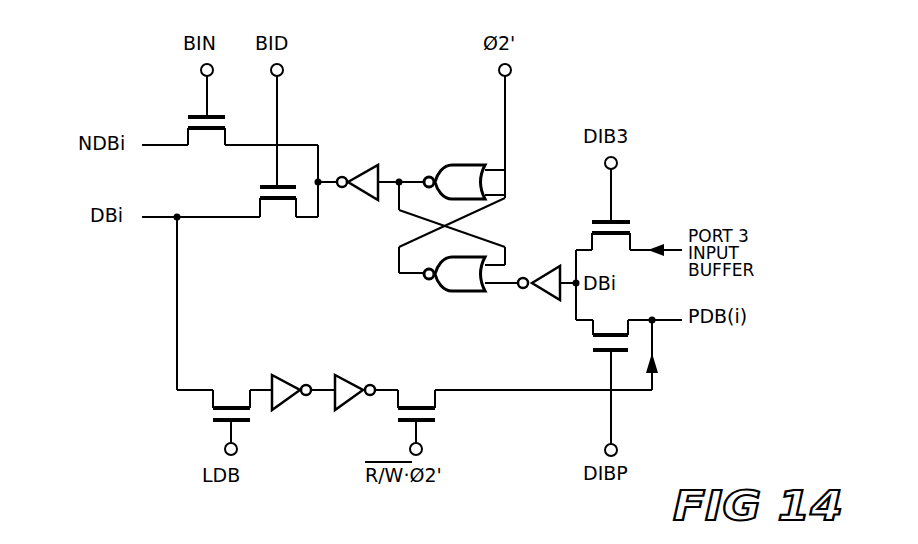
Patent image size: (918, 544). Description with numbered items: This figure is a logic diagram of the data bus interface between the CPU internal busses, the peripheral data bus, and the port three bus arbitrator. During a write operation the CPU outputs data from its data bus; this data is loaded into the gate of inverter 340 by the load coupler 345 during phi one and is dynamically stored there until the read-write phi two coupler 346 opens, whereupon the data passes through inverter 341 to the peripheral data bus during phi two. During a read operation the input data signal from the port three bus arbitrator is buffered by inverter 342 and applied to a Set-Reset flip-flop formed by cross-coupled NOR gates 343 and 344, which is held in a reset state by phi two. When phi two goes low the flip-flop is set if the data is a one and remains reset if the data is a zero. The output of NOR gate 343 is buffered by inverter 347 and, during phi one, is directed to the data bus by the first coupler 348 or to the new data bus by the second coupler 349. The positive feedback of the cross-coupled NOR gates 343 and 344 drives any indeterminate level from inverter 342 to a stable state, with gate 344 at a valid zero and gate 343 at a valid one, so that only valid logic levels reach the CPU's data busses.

The inverter 340 is at (285, 373).
The inverter 341 is at (350, 373).
The inverter 342 is at (538, 288).
The NOR gate 343 is at (453, 162).
The NOR gate 344 is at (438, 290).
The LDB coupler 345 is at (228, 392).
The R/W-bar phi 2 coupler 346 is at (447, 402).
The inverter 347 is at (363, 167).
The BID coupler 348 is at (278, 208).
The BIN coupler 349 is at (207, 137).